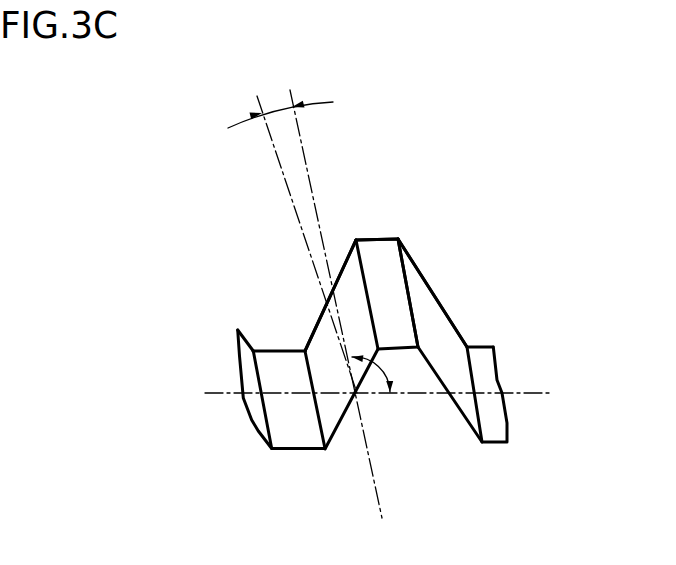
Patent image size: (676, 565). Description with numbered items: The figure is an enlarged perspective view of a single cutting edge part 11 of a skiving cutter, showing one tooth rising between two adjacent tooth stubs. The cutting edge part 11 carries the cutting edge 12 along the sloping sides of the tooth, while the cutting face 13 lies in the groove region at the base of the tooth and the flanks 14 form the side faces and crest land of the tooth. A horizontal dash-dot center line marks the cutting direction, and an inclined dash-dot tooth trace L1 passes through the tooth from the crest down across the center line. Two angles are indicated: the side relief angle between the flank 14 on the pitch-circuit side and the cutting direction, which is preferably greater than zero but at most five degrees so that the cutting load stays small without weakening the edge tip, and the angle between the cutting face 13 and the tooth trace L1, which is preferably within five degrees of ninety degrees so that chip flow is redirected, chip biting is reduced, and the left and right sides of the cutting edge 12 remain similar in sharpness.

The cutting edge part 11 is at (406, 325).
The cutting edge 12 is at (395, 348).
The cutting face 13 is at (425, 417).
The flank 14 is at (350, 292).
The tooth trace L1 is at (343, 318).